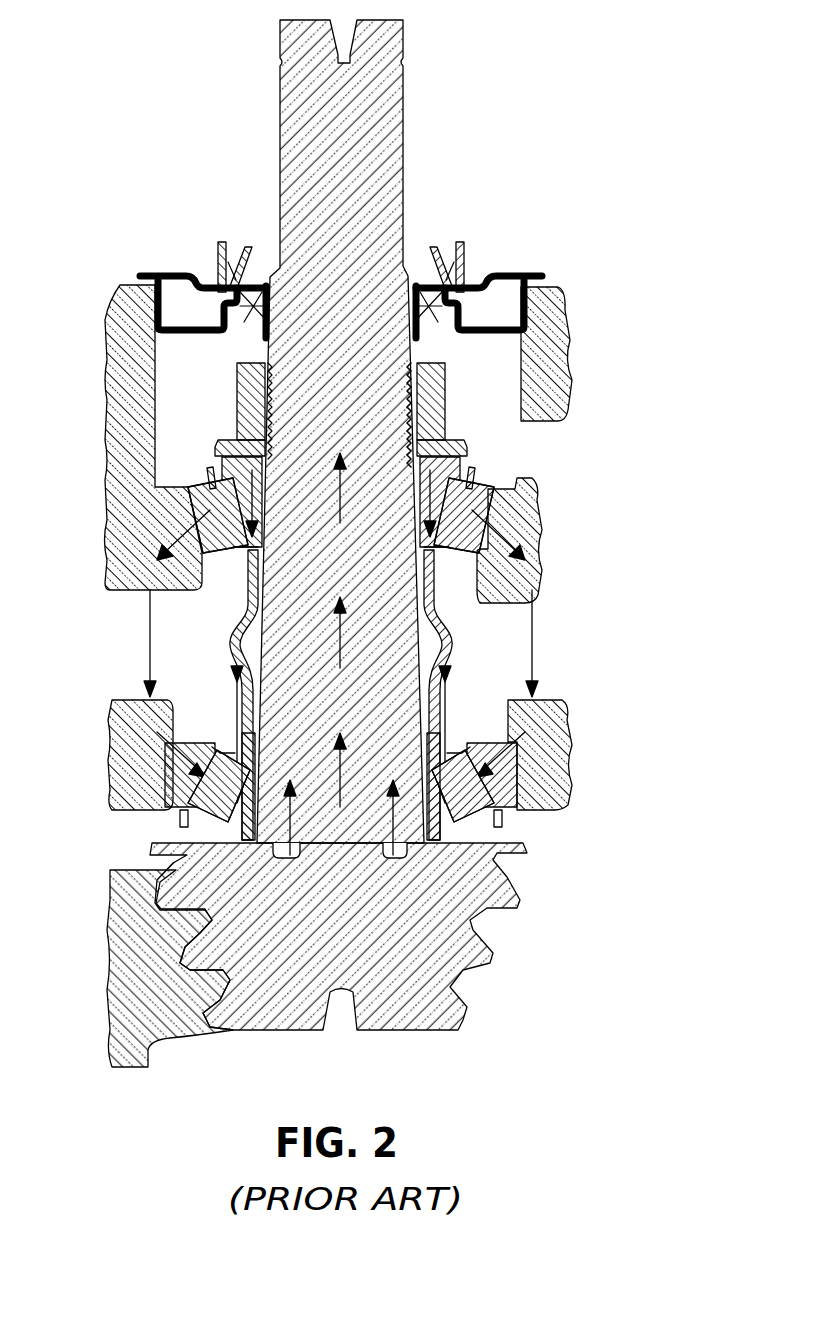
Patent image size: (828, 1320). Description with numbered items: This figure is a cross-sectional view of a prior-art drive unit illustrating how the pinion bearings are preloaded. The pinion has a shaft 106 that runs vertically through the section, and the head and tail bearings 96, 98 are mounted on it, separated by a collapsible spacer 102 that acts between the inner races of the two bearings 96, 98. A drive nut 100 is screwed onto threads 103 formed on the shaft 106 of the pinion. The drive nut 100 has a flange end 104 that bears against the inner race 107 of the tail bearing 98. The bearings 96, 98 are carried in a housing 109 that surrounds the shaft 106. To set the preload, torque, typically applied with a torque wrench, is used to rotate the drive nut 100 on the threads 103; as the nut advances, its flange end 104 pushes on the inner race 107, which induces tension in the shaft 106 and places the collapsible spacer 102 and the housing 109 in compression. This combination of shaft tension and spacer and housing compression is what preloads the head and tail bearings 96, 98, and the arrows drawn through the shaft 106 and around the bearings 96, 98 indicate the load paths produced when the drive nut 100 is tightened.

The head bearing 96 is at (537, 824).
The tail bearing 98 is at (497, 472).
The drive nut 100 is at (446, 398).
The collapsible spacer 102 is at (230, 641).
The threads 103 is at (238, 403).
The flange end 104 is at (213, 447).
The shaft 106 is at (322, 338).
The inner race 107 is at (468, 465).
The housing 109 is at (573, 766).